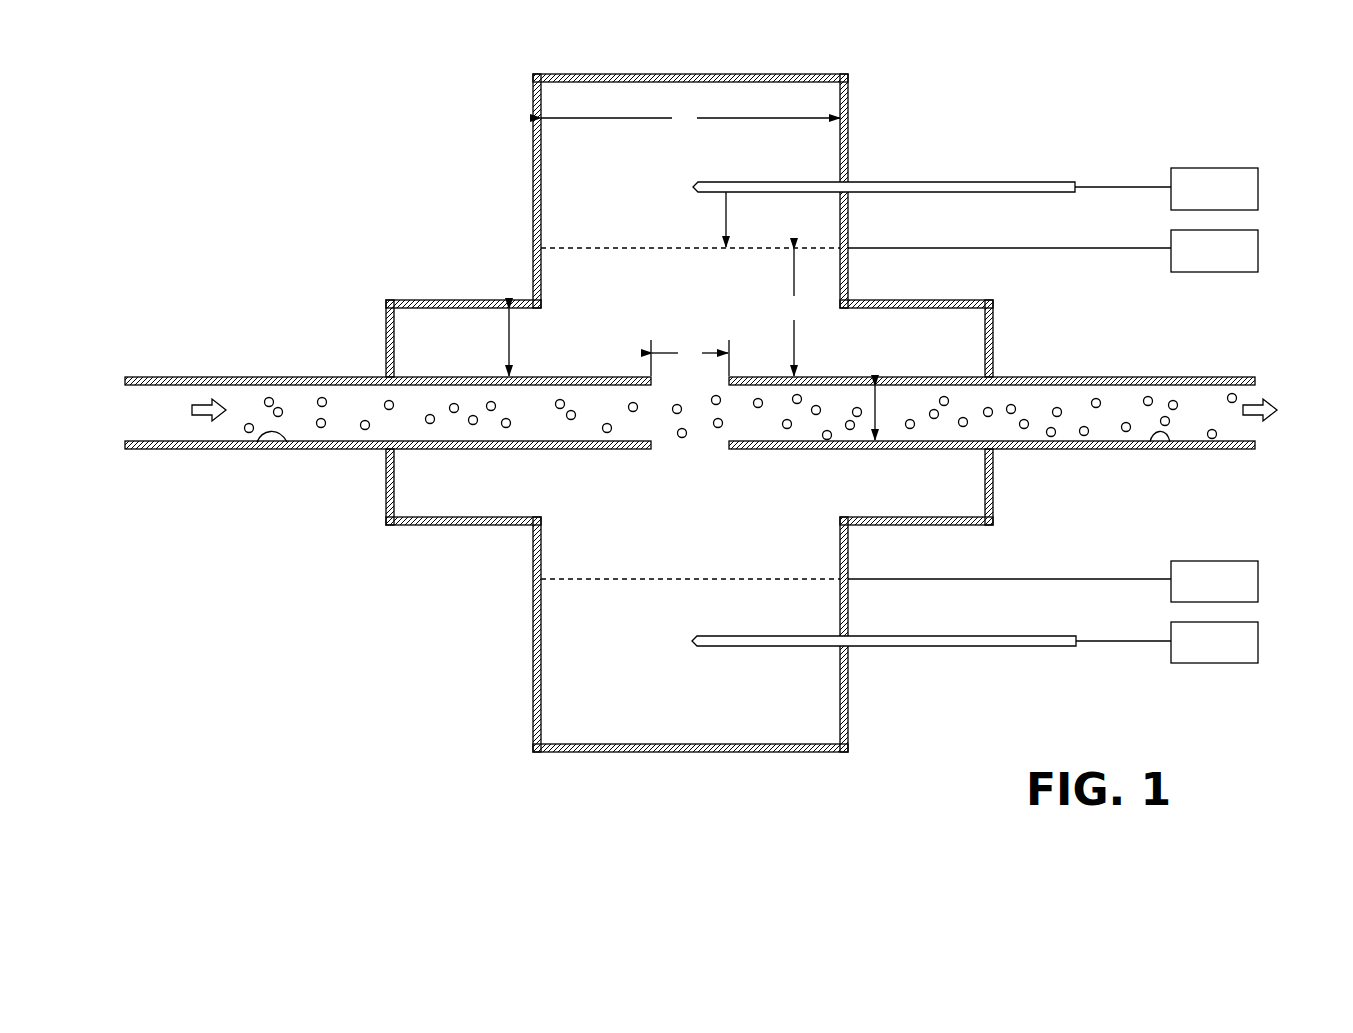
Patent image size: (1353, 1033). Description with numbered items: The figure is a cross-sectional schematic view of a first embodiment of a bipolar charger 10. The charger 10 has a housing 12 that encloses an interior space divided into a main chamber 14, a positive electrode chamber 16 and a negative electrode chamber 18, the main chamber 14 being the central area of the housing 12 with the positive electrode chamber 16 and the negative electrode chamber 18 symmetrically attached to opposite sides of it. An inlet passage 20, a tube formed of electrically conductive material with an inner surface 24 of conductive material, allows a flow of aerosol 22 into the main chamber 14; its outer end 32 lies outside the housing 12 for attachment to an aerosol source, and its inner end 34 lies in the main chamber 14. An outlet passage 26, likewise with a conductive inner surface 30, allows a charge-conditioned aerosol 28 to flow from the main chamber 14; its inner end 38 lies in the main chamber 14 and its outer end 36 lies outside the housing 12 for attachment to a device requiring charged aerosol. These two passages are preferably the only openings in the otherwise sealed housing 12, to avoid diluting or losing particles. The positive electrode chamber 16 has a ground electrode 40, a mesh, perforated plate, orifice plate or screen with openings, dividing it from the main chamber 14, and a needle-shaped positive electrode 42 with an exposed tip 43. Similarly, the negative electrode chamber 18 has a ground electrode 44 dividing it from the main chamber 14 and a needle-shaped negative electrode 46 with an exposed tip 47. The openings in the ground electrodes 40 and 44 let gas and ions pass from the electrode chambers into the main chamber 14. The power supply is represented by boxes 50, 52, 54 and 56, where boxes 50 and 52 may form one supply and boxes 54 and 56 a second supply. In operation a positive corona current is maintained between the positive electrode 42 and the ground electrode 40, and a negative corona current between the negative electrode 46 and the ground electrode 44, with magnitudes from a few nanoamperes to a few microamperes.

The charger 10 is at (380, 196).
The housing 12 is at (848, 151).
The main chamber 14 is at (598, 325).
The positive electrode chamber 16 is at (598, 190).
The negative electrode chamber 18 is at (588, 647).
The inlet passage 20 is at (253, 377).
The flow of aerosol 22 is at (345, 428).
The inner surface 24 is at (257, 442).
The outlet passage 26 is at (1091, 377).
The charge-conditioned aerosol 28 is at (1101, 430).
The inner surface 30 is at (1169, 442).
The outer end 32 is at (126, 379).
The inner end 34 is at (656, 380).
The outer end 36 is at (1258, 381).
The inner end 38 is at (733, 446).
The ground electrode 40 is at (580, 248).
The positive electrode 42 is at (748, 186).
The exposed tip 43 is at (693, 187).
The ground electrode 44 is at (745, 579).
The negative electrode 46 is at (730, 646).
The exposed tip 47 is at (693, 641).
The power supply box 50 is at (1258, 189).
The power supply box 52 is at (1258, 251).
The power supply box 54 is at (1258, 582).
The power supply box 56 is at (1258, 644).